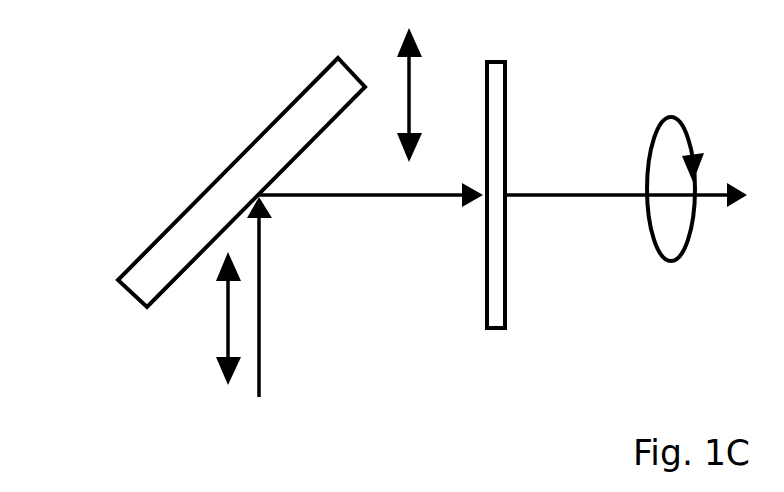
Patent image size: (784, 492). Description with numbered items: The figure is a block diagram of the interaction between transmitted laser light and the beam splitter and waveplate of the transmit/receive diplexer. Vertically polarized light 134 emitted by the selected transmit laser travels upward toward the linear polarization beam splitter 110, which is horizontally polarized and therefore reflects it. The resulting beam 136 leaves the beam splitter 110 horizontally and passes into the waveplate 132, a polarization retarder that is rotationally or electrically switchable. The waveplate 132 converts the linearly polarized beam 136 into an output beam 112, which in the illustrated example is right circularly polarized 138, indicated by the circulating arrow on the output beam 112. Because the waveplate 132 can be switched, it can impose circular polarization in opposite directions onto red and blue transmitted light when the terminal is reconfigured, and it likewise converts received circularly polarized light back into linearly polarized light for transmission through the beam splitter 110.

The beam splitter 110 is at (135, 265).
The output beam 112 is at (567, 197).
The waveplate 132 is at (507, 318).
The vertically polarized light 134 is at (260, 313).
The resulting beam 136 is at (340, 197).
The right circular polarization 138 is at (652, 135).